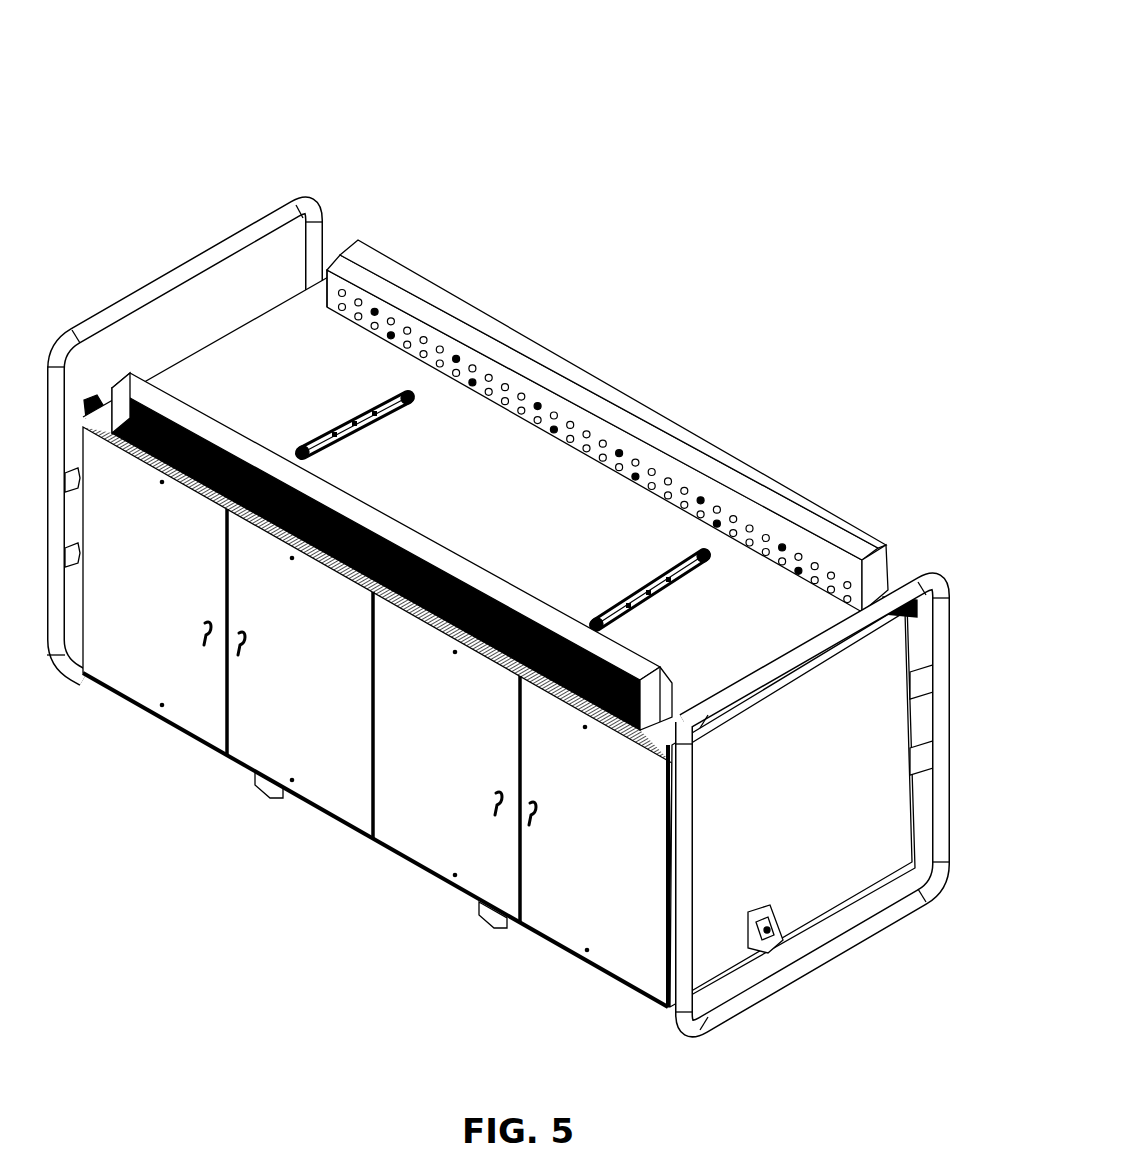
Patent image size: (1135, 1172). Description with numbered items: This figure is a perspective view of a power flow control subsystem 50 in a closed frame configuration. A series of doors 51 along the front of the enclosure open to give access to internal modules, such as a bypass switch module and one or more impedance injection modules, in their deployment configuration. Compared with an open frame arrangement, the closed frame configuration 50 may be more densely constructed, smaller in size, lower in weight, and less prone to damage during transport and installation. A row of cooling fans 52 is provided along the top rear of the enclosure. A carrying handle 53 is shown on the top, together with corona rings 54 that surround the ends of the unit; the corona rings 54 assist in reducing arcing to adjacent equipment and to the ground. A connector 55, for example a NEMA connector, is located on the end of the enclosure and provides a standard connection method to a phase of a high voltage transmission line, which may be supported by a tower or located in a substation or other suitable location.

The power flow control subsystem 50 is at (498, 545).
The doors 51 is at (508, 599).
The cooling fans 52 is at (596, 416).
The carrying handle 53 is at (374, 393).
The corona rings 54 is at (212, 240).
The connector 55 is at (777, 947).